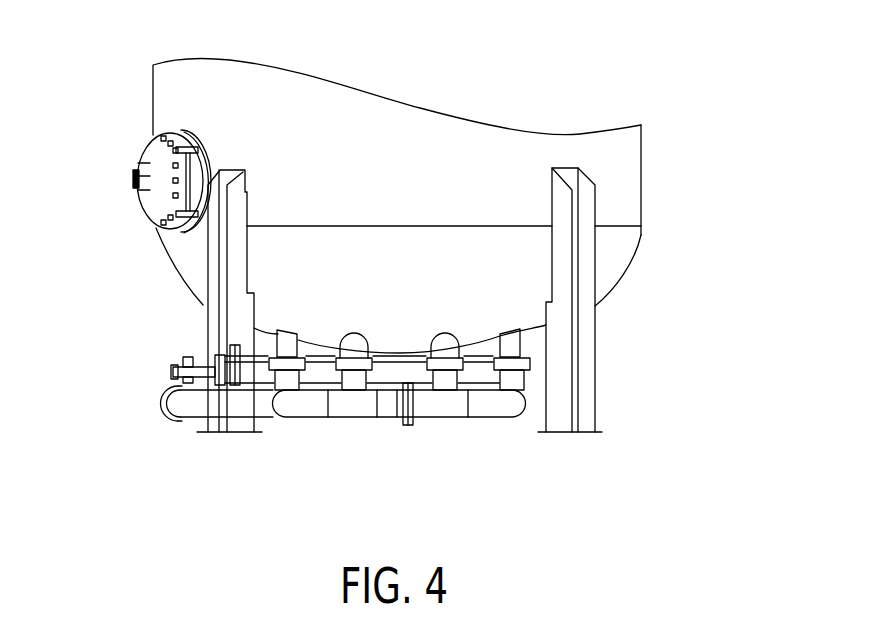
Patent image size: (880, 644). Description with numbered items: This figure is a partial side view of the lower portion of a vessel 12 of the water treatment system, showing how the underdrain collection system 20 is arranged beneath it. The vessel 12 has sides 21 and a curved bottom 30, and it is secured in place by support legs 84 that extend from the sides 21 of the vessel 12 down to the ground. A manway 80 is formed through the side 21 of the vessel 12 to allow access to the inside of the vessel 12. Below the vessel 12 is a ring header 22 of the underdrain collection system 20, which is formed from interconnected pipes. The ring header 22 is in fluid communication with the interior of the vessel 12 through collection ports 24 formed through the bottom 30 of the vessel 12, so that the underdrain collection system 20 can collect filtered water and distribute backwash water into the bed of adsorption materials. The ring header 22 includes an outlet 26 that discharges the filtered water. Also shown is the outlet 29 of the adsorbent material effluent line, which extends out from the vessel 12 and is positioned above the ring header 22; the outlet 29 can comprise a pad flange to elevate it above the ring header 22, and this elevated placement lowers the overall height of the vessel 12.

The first vessel 12 is at (648, 143).
The side of the vessel 21 is at (641, 190).
The support leg 84 is at (583, 270).
The manway 80 is at (140, 165).
The ring header 22 is at (448, 402).
The collection port 24 is at (273, 347).
The bottom of the vessel 30 is at (530, 335).
The outlet of the adsorbent material effluent line 29 is at (173, 372).
The outlet of the ring header 26 is at (165, 405).
The underdrain collection system 20 is at (328, 425).